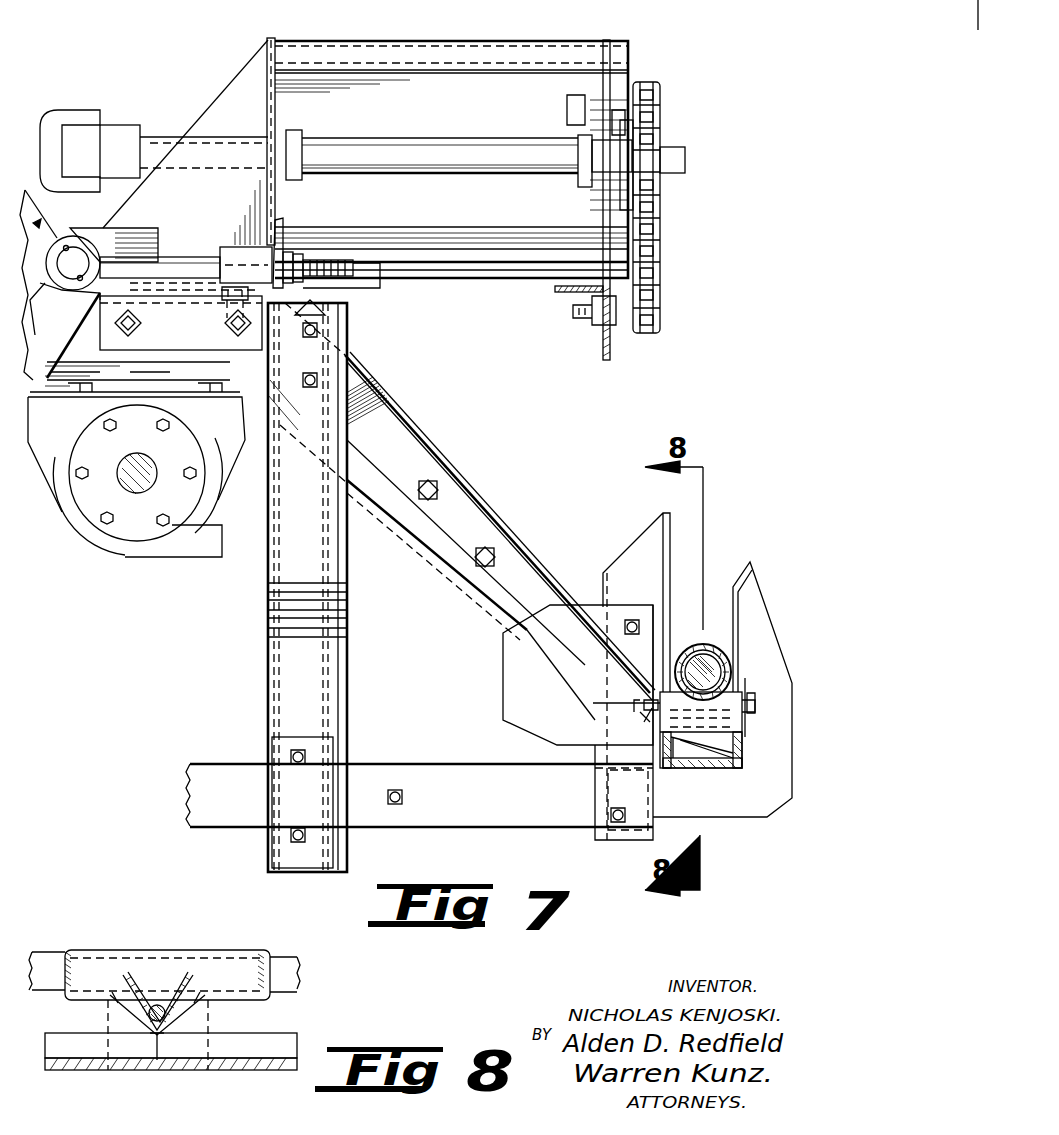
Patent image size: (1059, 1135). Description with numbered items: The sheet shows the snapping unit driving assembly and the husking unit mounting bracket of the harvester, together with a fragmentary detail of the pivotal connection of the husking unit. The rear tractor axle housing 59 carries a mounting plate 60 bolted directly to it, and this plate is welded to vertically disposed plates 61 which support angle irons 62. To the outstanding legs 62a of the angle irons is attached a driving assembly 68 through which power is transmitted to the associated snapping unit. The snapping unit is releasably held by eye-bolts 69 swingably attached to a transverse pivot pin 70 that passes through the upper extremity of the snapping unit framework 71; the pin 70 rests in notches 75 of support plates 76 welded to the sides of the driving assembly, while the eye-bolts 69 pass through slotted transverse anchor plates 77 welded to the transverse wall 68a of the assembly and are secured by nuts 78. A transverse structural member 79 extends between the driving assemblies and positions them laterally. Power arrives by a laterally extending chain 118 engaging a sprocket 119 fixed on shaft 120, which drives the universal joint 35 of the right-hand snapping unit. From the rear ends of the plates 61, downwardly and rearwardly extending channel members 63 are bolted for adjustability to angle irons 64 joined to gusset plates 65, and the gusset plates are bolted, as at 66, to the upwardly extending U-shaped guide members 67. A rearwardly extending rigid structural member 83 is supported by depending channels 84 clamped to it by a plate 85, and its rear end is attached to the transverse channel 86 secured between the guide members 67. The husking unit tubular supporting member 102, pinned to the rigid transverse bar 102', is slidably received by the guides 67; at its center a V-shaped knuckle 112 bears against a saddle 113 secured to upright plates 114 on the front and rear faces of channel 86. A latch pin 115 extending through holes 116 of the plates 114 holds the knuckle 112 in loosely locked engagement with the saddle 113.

In FIG. 7, the universal joint 35 is at (124, 126).
In FIG. 7, the rear tractor axle housing 59 is at (87, 503).
In FIG. 7, the mounting plate 60 is at (183, 402).
In FIG. 7, the vertically disposed plate 61 is at (210, 375).
In FIG. 7, the angle iron 62 is at (186, 338).
In FIG. 7, the outstanding leg 62a is at (205, 300).
In FIG. 7, the channel member 63 is at (365, 382).
In FIG. 7, the angle iron 64 is at (508, 568).
In FIG. 7, the gusset plate 65 is at (518, 670).
In FIG. 7, the bolt 66 is at (625, 625).
In FIG. 7, the U-shaped guide member 67 is at (640, 562).
In FIG. 7, the driving assembly 68 is at (375, 62).
In FIG. 7, the transverse wall 68a is at (272, 84).
In FIG. 7, the eye-bolt 69 is at (180, 260).
In FIG. 7, the transverse pivot pin 70 is at (58, 285).
In FIG. 7, the snapping unit framework 71 is at (28, 188).
In FIG. 7, the notch 75 is at (63, 240).
In FIG. 7, the support plate 76 is at (125, 245).
In FIG. 7, the slotted transverse anchor plate 77 is at (290, 250).
In FIG. 7, the nut 78 is at (300, 262).
In FIG. 7, the transverse structural member 79 is at (597, 338).
In FIG. 7, the rigid structural member 83 is at (505, 810).
In FIG. 7, the depending channel 84 is at (303, 670).
In FIG. 7, the plate 85 is at (290, 853).
In FIG. 7, the transverse channel 86 is at (692, 765).
In FIG. 8, the transverse channel 86 is at (275, 1045).
In FIG. 7, the tubular supporting member 102 is at (730, 590).
In FIG. 8, the tubular supporting member 102 is at (167, 954).
In FIG. 7, the rigid transverse bar 102' is at (722, 669).
In FIG. 8, the rigid transverse bar 102' is at (163, 949).
In FIG. 8, the V-shaped knuckle 112 is at (195, 985).
In FIG. 7, the saddle 113 is at (712, 732).
In FIG. 8, the saddle 113 is at (195, 1013).
In FIG. 7, the upright plate 114 is at (745, 747).
In FIG. 8, the upright plate 114 is at (118, 1022).
In FIG. 7, the latch pin 115 is at (640, 705).
In FIG. 8, the latch pin 115 is at (155, 1035).
In FIG. 8, the hole 116 is at (158, 1005).
In FIG. 7, the chain 118 is at (655, 289).
In FIG. 7, the sprocket 119 is at (648, 182).
In FIG. 7, the shaft 120 is at (440, 150).